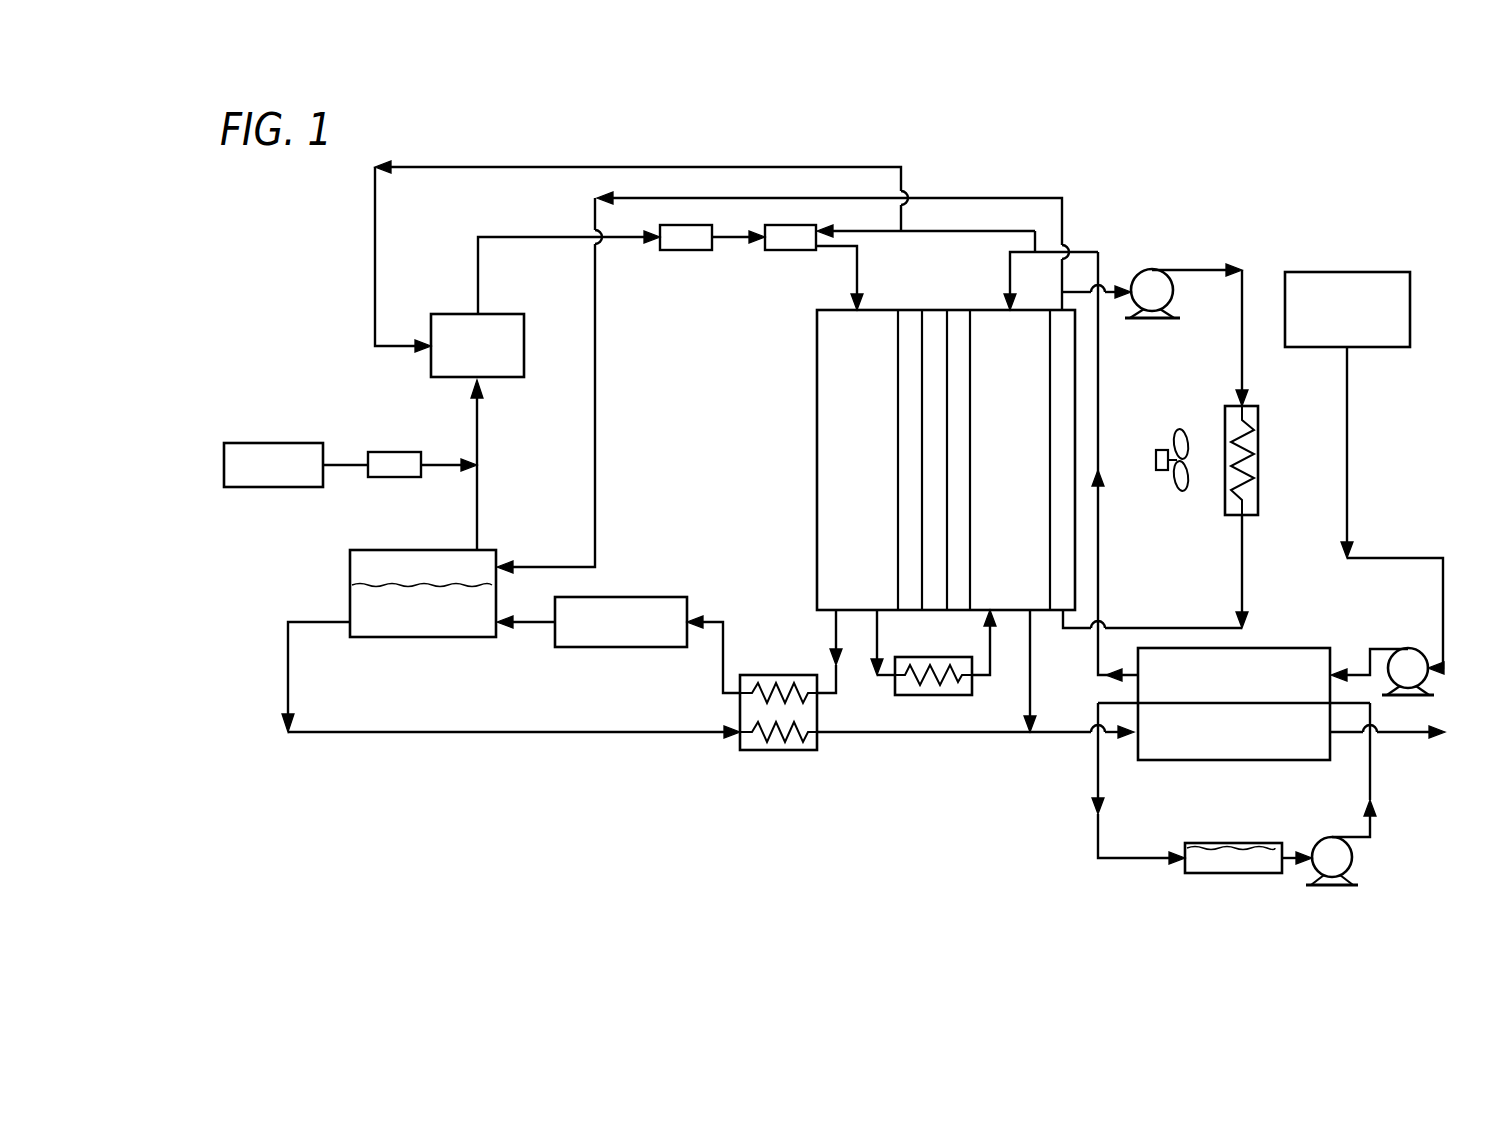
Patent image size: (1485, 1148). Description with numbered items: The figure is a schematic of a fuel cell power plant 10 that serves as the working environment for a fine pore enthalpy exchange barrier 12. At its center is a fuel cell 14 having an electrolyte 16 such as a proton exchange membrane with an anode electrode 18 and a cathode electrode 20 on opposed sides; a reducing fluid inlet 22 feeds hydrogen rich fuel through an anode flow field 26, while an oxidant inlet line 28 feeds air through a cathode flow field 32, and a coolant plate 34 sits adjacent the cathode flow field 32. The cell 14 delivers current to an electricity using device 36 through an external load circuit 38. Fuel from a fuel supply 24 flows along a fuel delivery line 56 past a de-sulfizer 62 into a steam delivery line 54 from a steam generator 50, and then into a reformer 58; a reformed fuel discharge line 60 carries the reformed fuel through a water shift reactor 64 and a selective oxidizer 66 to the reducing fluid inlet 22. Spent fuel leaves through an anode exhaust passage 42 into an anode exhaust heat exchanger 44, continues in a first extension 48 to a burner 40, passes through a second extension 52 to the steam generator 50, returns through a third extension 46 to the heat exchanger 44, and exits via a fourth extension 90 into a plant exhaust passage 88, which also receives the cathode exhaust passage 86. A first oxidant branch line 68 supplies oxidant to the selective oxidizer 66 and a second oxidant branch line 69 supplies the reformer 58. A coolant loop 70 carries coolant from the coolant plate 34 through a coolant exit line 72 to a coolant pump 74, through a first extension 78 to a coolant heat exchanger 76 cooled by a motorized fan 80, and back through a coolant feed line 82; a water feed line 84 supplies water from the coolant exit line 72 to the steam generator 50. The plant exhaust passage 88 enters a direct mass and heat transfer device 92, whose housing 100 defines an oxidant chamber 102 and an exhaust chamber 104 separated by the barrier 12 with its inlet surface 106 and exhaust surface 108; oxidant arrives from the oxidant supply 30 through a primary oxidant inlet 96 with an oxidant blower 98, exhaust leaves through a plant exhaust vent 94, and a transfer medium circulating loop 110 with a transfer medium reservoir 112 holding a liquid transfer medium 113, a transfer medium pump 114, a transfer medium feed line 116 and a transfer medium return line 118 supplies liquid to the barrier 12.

The fuel cell power plant 10 is at (1310, 155).
The fine pore enthalpy exchange barrier 12 is at (1160, 720).
The fuel cell 14 is at (915, 285).
The electrolyte 16 is at (935, 323).
The anode electrode 18 is at (905, 383).
The cathode electrode 20 is at (960, 387).
The reducing fluid inlet 22 is at (855, 262).
The fuel supply 24 is at (272, 443).
The anode flow field 26 is at (866, 500).
The oxidant inlet line 28 is at (1100, 258).
The oxidant supply 30 is at (1362, 272).
The cathode flow field 32 is at (1031, 500).
The coolant plate 34 is at (1058, 542).
The electricity using device 36 is at (920, 664).
The external load circuit 38 is at (878, 678).
The burner 40 is at (633, 597).
The anode exhaust passage 42 is at (835, 627).
The anode exhaust heat exchanger 44 is at (757, 750).
The third extension of the anode exhaust passage 46 is at (288, 659).
The first extension of the anode exhaust passage 48 is at (723, 634).
The steam generator 50 is at (350, 560).
The second extension of the anode exhaust passage 52 is at (530, 624).
The steam delivery line 54 is at (478, 493).
The fuel delivery line 56 is at (433, 462).
The reformer 58 is at (459, 313).
The reformed fuel discharge line 60 is at (478, 255).
The de-sulfizer 62 is at (392, 470).
The water shift reactor 64 is at (660, 250).
The selective oxidizer 66 is at (765, 250).
The first oxidant branch line 68 is at (990, 225).
The second oxidant branch line 69 is at (615, 167).
The coolant loop 70 is at (1220, 245).
The coolant exit line 72 is at (1102, 293).
The coolant pump 74 is at (1172, 287).
The coolant heat exchanger 76 is at (1250, 455).
The first extension of the coolant exit line 78 is at (1242, 348).
The motorized fan 80 is at (1168, 450).
The coolant feed line 82 is at (1196, 628).
The water feed line 84 is at (1062, 205).
The cathode exhaust passage 86 is at (1031, 630).
The plant exhaust passage 88 is at (1050, 734).
The fourth extension of the anode exhaust passage 90 is at (935, 734).
The direct mass and heat transfer device 92 is at (1286, 620).
The plant exhaust vent 94 is at (1402, 734).
The primary oxidant inlet 96 is at (1348, 452).
The oxidant blower 98 is at (1410, 648).
The housing 100 is at (1262, 760).
The oxidant chamber 102 is at (1298, 681).
The exhaust chamber 104 is at (1249, 738).
The inlet surface 106 is at (1200, 665).
The exhaust surface 108 is at (1296, 704).
The transfer medium circulating loop 110 is at (1045, 825).
The transfer medium reservoir 112 is at (1195, 875).
The liquid transfer medium 113 is at (1246, 856).
The transfer medium pump 114 is at (1350, 850).
The transfer medium feed line 116 is at (1368, 826).
The transfer medium return line 118 is at (1098, 858).